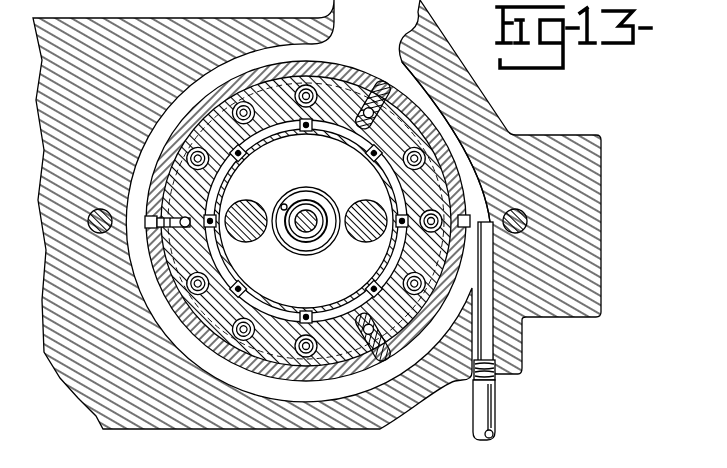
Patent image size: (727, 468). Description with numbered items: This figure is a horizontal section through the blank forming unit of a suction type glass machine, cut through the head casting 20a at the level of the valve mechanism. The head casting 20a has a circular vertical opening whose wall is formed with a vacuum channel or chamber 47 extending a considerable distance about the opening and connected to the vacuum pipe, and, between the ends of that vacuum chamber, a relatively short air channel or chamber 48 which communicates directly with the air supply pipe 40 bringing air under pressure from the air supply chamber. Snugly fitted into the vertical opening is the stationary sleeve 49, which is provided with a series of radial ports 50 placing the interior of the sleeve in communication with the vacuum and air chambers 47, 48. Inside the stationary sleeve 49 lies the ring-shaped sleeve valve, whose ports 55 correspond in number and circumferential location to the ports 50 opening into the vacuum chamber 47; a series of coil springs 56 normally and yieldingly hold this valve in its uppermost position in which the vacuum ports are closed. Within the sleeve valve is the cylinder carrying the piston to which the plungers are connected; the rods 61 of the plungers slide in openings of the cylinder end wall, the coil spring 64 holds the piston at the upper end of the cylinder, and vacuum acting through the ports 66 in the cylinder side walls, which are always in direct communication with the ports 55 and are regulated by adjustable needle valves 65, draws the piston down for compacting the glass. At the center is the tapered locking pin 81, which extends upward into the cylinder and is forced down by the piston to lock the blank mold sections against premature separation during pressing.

The head casting 20a is at (599, 220).
The air supply pipe 40 is at (478, 420).
The vacuum channel or chamber 47 is at (264, 382).
The air channel or chamber 48 is at (477, 190).
The stationary sleeve 49 is at (319, 378).
The radial ports 50 is at (466, 227).
The ports of sleeve valve 55 is at (150, 219).
The coil springs 56 is at (244, 102).
The rods 61 is at (372, 201).
The coil spring 64 is at (297, 195).
The needle valves 65 is at (306, 312).
The ports 66 is at (366, 320).
The locking pin 81 is at (310, 211).